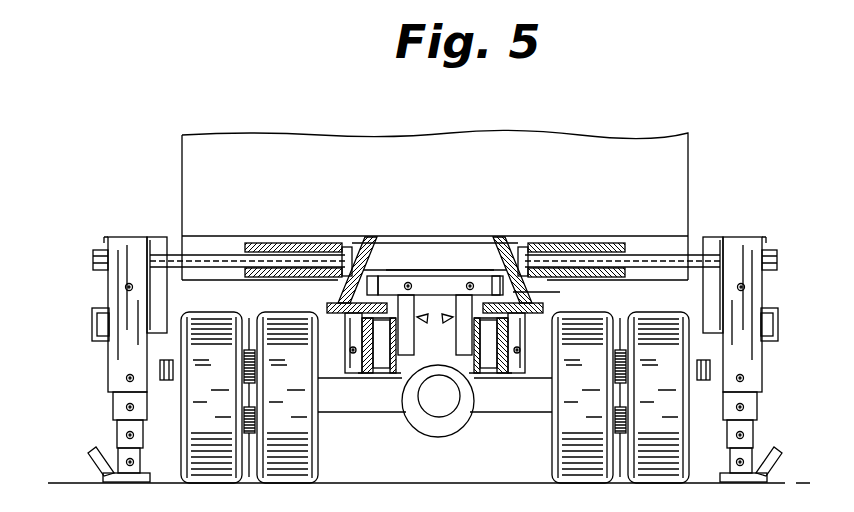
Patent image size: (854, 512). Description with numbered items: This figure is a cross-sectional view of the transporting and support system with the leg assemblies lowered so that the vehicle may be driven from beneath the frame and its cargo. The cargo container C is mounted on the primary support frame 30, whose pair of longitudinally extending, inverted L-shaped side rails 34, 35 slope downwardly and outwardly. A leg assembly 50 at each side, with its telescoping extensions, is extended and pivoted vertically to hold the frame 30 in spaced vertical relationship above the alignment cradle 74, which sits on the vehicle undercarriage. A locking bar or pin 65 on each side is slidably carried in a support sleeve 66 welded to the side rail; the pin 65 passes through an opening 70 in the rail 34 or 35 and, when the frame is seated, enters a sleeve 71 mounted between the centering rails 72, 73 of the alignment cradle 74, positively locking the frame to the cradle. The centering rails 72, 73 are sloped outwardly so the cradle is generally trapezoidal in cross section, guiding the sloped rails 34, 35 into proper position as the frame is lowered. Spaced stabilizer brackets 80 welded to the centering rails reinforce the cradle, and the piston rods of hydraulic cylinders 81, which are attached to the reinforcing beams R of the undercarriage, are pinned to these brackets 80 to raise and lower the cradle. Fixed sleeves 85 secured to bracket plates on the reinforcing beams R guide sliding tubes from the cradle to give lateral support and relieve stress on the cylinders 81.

The cargo container C is at (680, 156).
The leg assembly 50 is at (98, 289).
The locking bar or pin 65 is at (217, 256).
The support sleeve 66 is at (283, 243).
The opening 70 is at (337, 252).
The primary support frame 30 is at (390, 206).
The longitudinally extending rail or beam 34 is at (357, 250).
The longitudinally extending rail or beam 35 is at (515, 247).
The alignment cradle 74 is at (492, 260).
The stabilizer bracket 80 is at (456, 285).
The centering rail 73 is at (346, 292).
The sleeve 71 is at (562, 293).
The centering rail 72 is at (564, 317).
The fixed sleeve 85 is at (342, 358).
The reinforcing beam R is at (388, 392).
The hydraulic cylinder 81 is at (438, 401).